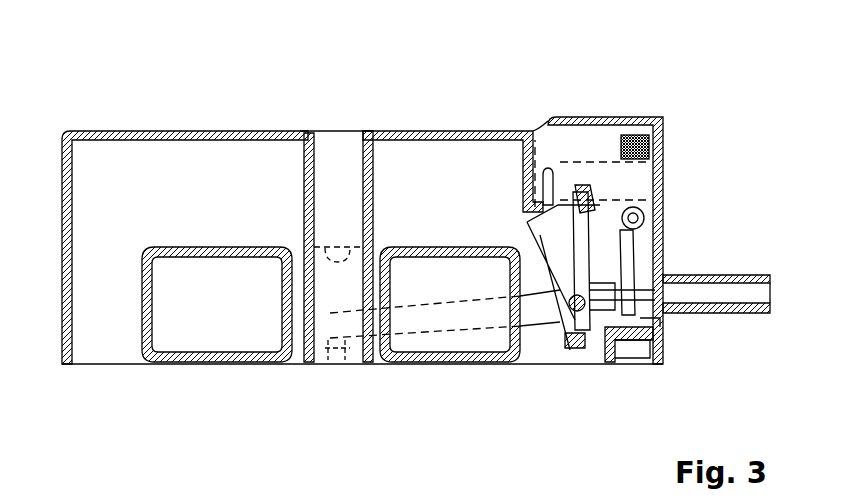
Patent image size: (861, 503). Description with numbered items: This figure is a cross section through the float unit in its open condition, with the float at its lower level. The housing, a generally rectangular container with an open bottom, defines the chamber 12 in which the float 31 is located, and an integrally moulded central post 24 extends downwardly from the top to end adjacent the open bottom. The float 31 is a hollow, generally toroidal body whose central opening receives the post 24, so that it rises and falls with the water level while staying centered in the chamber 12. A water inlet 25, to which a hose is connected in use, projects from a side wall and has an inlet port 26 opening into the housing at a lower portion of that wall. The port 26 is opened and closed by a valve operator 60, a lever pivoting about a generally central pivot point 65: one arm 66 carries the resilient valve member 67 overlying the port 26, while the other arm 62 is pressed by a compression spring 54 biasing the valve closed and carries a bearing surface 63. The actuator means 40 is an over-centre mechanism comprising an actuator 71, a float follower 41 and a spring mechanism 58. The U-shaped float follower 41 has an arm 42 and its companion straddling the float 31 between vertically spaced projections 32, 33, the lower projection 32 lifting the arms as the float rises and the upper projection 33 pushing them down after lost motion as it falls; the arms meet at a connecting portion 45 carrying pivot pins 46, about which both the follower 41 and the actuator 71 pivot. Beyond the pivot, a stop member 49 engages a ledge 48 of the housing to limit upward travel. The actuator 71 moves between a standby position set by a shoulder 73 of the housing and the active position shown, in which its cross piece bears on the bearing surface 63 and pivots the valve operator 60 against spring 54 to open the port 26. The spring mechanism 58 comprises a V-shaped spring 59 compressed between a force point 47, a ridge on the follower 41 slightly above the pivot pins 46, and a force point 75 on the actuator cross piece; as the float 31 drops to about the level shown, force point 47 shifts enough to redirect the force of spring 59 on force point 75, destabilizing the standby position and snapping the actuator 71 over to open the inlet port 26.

The chamber 12 is at (105, 335).
The central post 24 is at (305, 175).
The water inlet 25 is at (743, 297).
The inlet port 26 is at (690, 312).
The float 31 is at (178, 247).
The lower projection 32 is at (335, 365).
The upper projection 33 is at (322, 247).
The actuator means 40 is at (528, 244).
The float follower 41 is at (527, 333).
The arm of float follower 42 is at (439, 336).
The connecting portion 45 is at (660, 305).
The pivot pins 46 is at (597, 318).
The force point 47 is at (577, 311).
The ledge 48 is at (665, 320).
The stop member 49 is at (597, 337).
The compression spring 54 is at (600, 212).
The spring mechanism 58 is at (527, 219).
The V-shaped spring 59 is at (555, 205).
The valve operator 60 is at (650, 262).
The arm of lever 62 is at (640, 205).
The bearing surface 63 is at (585, 185).
The pivot point 65 is at (605, 215).
The arm of lever 66 is at (630, 248).
The valve member 67 is at (660, 270).
The actuator 71 is at (640, 185).
The shoulder 73 is at (548, 133).
The force point 75 is at (575, 215).